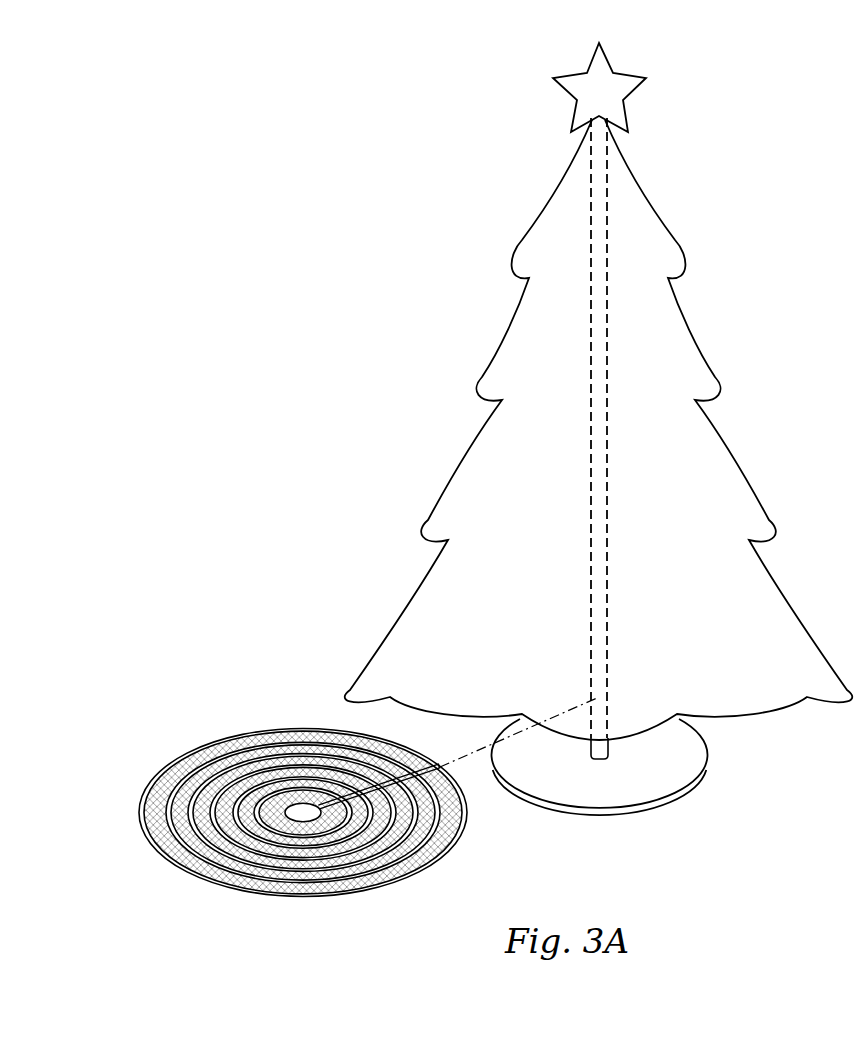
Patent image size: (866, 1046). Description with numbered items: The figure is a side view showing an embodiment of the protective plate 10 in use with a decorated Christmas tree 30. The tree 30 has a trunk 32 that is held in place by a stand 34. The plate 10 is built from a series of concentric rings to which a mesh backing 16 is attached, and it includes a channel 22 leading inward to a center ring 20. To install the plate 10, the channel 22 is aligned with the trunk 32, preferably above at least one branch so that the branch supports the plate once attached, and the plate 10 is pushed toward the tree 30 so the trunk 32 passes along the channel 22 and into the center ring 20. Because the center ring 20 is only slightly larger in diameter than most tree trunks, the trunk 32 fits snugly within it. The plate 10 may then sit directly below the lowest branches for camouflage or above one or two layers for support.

The protective plate 10 is at (368, 781).
The mesh backing 16 is at (257, 860).
The center ring 20 is at (302, 818).
The channel 22 is at (417, 757).
The Christmas tree 30 is at (703, 439).
The trunk 32 is at (608, 750).
The stand 34 is at (646, 808).